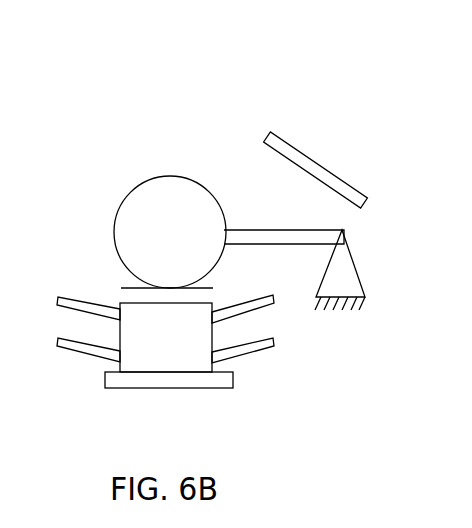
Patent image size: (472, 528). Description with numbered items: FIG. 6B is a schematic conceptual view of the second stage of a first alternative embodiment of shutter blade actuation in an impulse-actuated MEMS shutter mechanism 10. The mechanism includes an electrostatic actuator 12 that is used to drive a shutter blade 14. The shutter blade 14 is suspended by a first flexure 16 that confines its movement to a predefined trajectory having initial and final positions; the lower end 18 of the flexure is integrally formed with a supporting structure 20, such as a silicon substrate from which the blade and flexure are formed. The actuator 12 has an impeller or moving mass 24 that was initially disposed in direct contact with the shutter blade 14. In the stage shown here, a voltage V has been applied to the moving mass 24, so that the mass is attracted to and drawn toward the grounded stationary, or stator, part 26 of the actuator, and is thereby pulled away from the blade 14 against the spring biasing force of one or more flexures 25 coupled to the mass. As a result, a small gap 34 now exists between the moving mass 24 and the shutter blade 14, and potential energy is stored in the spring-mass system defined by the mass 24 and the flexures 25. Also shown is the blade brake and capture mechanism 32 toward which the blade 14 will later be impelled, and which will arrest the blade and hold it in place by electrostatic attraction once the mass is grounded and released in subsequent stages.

The shutter mechanism 10 is at (160, 101).
The actuator 12 is at (149, 368).
The shutter blade 14 is at (146, 176).
The first flexure 16 is at (272, 229).
The lower end of the flexure 18 is at (345, 234).
The supporting structure 20 is at (343, 297).
The moving mass 24 is at (214, 336).
The flexures 25 is at (82, 315).
The stator part 26 is at (117, 389).
The brake and capture mechanism 32 is at (358, 187).
The gap 34 is at (115, 294).